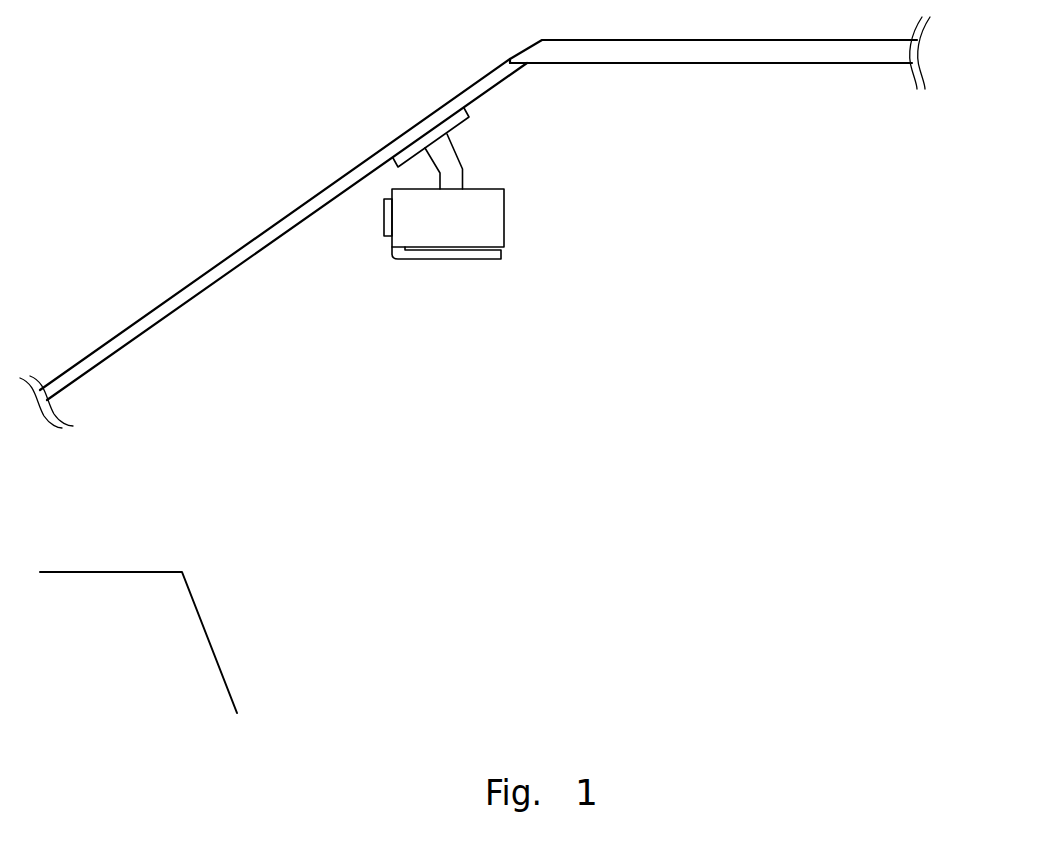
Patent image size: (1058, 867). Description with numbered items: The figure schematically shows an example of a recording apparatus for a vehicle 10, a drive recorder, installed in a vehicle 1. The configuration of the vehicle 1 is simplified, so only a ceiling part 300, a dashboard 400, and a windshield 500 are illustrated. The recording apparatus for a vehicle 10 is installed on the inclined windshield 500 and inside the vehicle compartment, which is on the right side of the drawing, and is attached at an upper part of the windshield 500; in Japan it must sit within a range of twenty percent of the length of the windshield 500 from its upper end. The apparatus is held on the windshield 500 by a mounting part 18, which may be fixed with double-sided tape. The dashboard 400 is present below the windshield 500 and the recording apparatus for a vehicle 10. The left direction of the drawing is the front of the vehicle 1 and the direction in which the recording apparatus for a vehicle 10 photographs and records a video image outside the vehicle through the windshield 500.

The vehicle 1 is at (249, 86).
The recording apparatus for a vehicle 10 is at (446, 220).
The mounting part 18 is at (458, 158).
The ceiling part 300 is at (659, 64).
The dashboard 400 is at (137, 571).
The windshield 500 is at (103, 346).